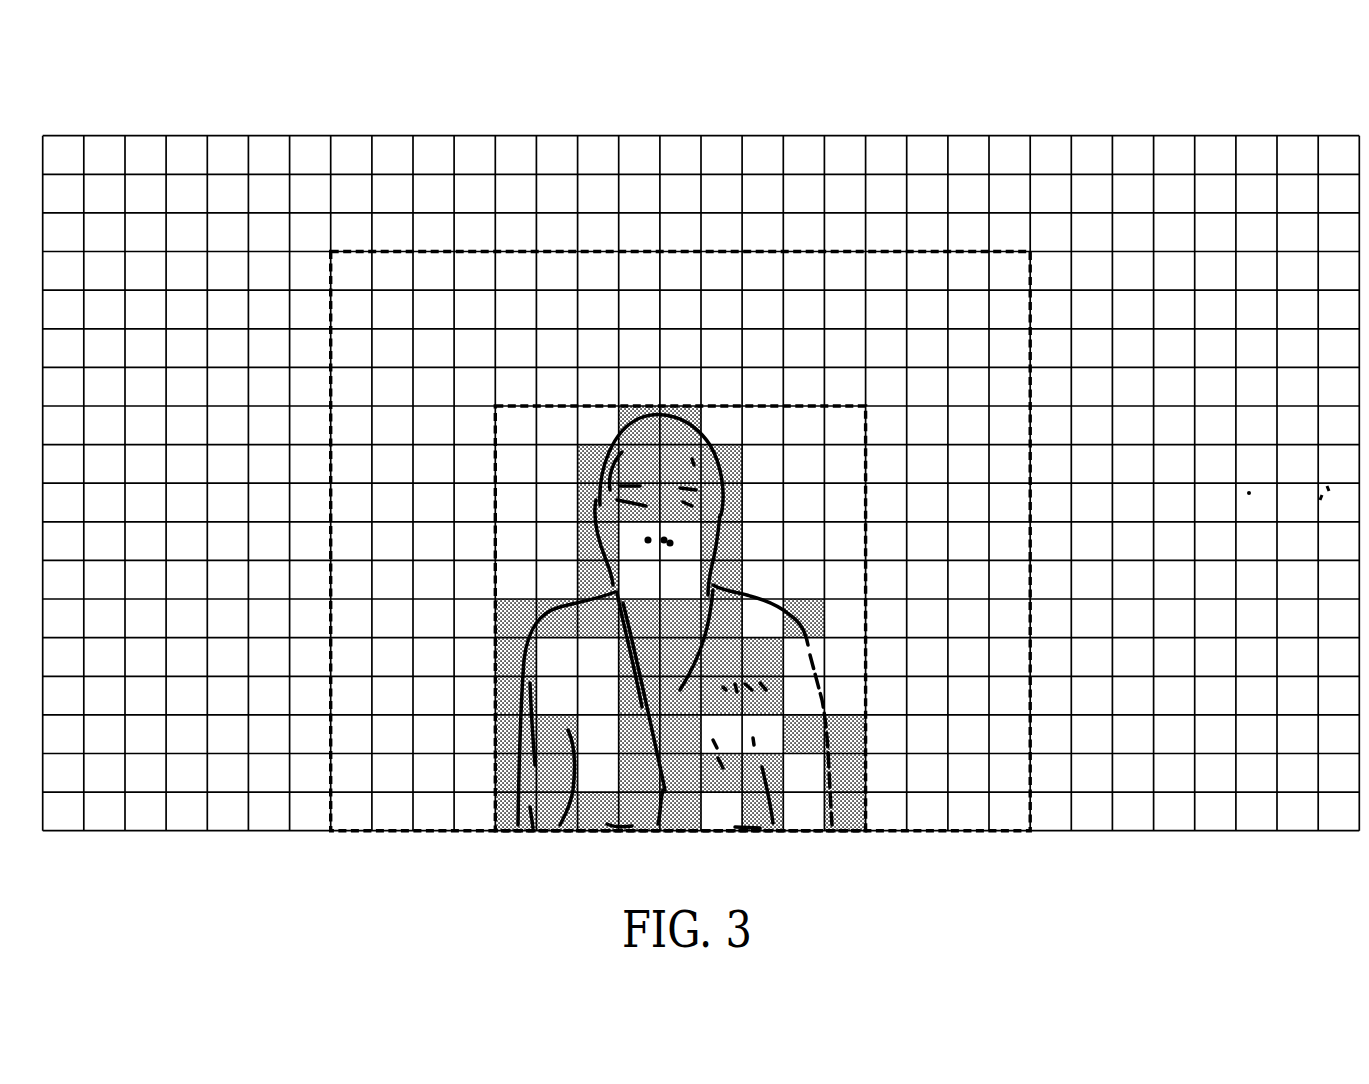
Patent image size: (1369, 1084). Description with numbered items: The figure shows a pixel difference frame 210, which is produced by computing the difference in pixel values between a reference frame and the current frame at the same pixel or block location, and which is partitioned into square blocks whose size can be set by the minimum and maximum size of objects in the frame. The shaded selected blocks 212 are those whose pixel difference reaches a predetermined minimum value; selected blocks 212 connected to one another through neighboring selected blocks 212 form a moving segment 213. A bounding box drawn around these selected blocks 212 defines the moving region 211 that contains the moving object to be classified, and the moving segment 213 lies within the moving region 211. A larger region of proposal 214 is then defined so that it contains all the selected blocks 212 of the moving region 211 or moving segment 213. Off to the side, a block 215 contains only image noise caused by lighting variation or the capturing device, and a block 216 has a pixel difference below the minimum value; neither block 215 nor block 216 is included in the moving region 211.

The pixel difference frame 210 is at (228, 135).
The moving region 211 is at (558, 406).
The selected block 212 is at (730, 450).
The segment 213 is at (808, 607).
The region of proposal 214 is at (970, 252).
The block containing image noise 215 is at (1251, 487).
The block with pixel difference below the minimum value 216 is at (1338, 487).